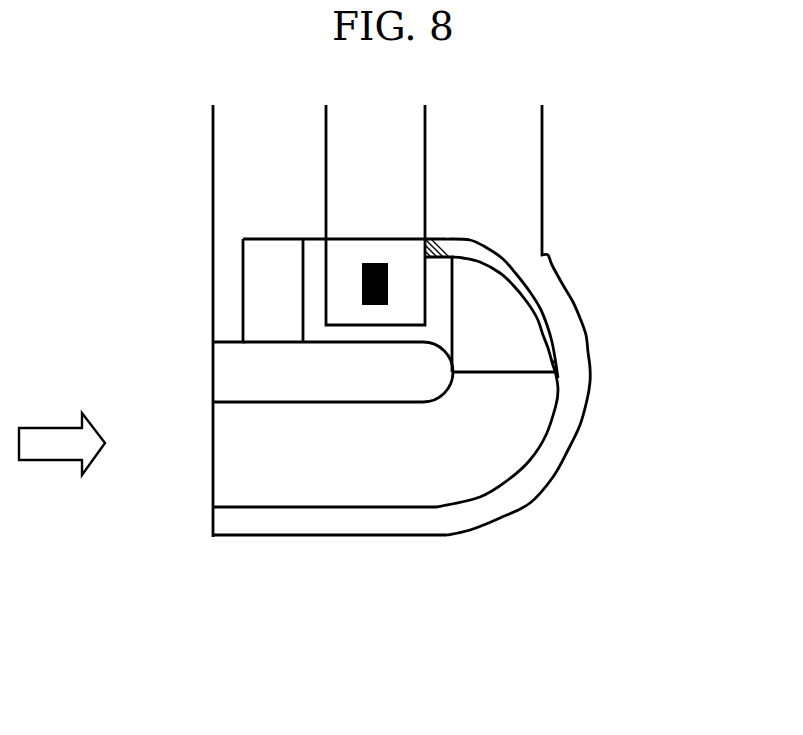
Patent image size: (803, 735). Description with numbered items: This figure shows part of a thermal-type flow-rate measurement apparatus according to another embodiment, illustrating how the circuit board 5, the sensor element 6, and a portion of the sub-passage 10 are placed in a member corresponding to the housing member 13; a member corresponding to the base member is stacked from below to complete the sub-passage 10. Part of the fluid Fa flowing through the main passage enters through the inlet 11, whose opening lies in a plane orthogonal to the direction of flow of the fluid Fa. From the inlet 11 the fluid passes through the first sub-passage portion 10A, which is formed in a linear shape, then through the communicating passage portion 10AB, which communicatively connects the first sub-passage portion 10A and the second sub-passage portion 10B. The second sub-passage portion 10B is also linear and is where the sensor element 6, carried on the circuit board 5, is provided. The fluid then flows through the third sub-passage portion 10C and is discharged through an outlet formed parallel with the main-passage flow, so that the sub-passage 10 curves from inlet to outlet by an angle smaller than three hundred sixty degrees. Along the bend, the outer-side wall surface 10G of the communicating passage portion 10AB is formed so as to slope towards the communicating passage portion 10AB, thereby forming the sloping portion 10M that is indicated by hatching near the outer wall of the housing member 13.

The circuit board 5 is at (393, 173).
The sensor element 6 is at (384, 262).
The sub-passage 10 is at (327, 490).
The first sub-passage portion 10A is at (433, 460).
The communicating passage portion 10AB is at (508, 348).
The second sub-passage portion 10B is at (440, 298).
The third sub-passage portion 10C is at (260, 293).
The outer-side wall surface 10G is at (487, 289).
The sloping portion 10M is at (482, 246).
The inlet 11 is at (213, 482).
The housing member 13 is at (553, 477).
The fluid Fa is at (58, 453).